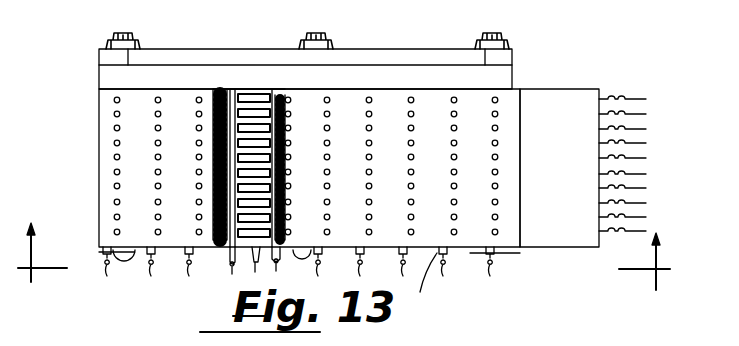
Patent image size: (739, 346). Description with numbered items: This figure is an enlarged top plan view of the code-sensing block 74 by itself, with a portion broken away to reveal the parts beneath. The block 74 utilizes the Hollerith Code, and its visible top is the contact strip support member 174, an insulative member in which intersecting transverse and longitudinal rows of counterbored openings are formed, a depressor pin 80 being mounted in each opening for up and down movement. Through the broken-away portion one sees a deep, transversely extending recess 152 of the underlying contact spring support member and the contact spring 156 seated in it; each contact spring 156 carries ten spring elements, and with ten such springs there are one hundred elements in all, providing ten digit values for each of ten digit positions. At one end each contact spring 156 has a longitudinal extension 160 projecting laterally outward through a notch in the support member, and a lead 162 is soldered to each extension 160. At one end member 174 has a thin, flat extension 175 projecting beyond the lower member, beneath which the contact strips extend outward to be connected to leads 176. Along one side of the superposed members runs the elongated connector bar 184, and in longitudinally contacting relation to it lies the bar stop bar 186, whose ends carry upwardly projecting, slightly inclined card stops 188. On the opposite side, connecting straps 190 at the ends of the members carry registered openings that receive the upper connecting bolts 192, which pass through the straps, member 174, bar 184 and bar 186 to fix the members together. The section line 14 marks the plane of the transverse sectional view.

The section line 14- 14 is at (341, 275).
The code-sensing block 74 is at (168, 252).
The depressor pin 80 is at (412, 97).
The transverse recess 152 is at (264, 107).
The contact spring 156 is at (258, 255).
The longitudinal extension 160 is at (485, 302).
The lead 162 is at (490, 266).
The contact strip support member 174 is at (472, 100).
The extension 175 is at (568, 88).
The lead 176 is at (646, 118).
The connector bar 184 is at (172, 75).
The bar stop bar 186 is at (361, 49).
The card stop 188 is at (110, 59).
The connecting strap 190 is at (99, 252).
The upper connecting bolt 192 is at (122, 255).